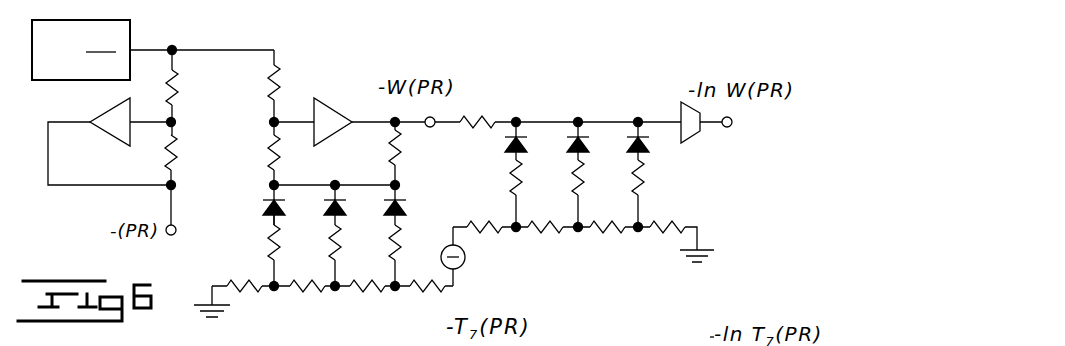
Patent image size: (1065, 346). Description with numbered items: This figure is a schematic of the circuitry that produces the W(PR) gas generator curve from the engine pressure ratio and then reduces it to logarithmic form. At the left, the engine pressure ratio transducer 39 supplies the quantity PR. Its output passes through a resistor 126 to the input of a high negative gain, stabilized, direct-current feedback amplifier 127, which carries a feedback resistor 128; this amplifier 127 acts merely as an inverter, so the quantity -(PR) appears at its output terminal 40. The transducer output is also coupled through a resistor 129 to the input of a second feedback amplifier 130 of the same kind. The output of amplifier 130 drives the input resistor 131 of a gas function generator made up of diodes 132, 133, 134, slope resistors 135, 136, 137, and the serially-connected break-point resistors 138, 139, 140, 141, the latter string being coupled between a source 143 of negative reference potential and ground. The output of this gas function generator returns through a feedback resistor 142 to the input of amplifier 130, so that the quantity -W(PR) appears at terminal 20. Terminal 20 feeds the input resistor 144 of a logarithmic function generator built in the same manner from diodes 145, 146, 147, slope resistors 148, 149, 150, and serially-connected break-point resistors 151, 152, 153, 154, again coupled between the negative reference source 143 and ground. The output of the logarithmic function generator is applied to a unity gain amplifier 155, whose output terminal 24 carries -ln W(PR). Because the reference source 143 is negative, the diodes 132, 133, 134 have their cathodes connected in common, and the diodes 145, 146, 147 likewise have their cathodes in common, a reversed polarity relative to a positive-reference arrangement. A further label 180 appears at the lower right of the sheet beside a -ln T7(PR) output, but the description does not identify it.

The engine pressure ratio transducer 39 is at (130, 30).
The resistor 126 is at (208, 85).
The feedback amplifier 127 is at (105, 138).
The feedback resistor 128 is at (178, 150).
The resistor 129 is at (280, 82).
The feedback amplifier 130 is at (358, 82).
The input resistor 131 is at (388, 148).
The diode 132 is at (406, 200).
The diode 133 is at (346, 200).
The diode 134 is at (262, 200).
The slope resistor 135 is at (388, 250).
The slope resistor 136 is at (328, 250).
The slope resistor 137 is at (266, 245).
The break-point resistor 138 is at (446, 306).
The break-point resistor 139 is at (365, 295).
The break-point resistor 140 is at (305, 295).
The break-point resistor 141 is at (255, 295).
The feedback resistor 142 is at (266, 160).
The source of negative reference potential 143 is at (488, 264).
The input resistor 144 is at (484, 114).
The diode 145 is at (506, 140).
The diode 146 is at (567, 140).
The diode 147 is at (650, 140).
The slope resistor 148 is at (509, 182).
The slope resistor 149 is at (571, 185).
The slope resistor 150 is at (645, 190).
The break-point resistor 151 is at (488, 236).
The break-point resistor 152 is at (555, 236).
The break-point resistor 153 is at (615, 236).
The break-point resistor 154 is at (670, 236).
The unity gain amplifier 155 is at (681, 104).
The terminal 20 is at (428, 128).
The terminal 24 is at (727, 128).
The terminal 40 is at (171, 236).
The output -ln T7(PR) 180 is at (692, 336).